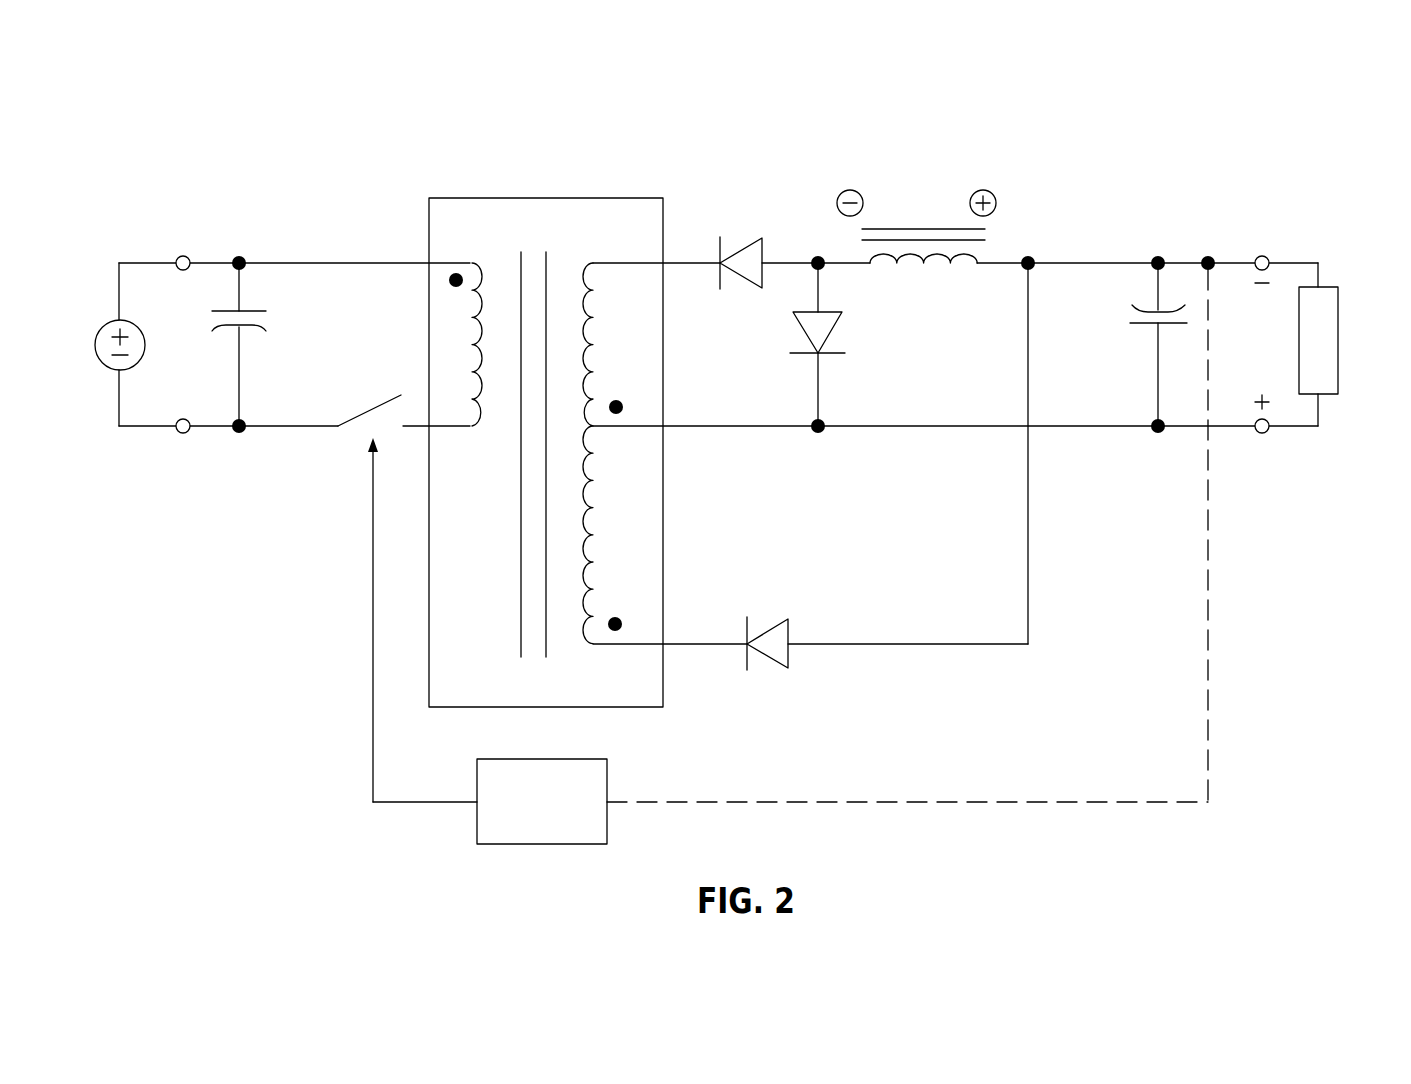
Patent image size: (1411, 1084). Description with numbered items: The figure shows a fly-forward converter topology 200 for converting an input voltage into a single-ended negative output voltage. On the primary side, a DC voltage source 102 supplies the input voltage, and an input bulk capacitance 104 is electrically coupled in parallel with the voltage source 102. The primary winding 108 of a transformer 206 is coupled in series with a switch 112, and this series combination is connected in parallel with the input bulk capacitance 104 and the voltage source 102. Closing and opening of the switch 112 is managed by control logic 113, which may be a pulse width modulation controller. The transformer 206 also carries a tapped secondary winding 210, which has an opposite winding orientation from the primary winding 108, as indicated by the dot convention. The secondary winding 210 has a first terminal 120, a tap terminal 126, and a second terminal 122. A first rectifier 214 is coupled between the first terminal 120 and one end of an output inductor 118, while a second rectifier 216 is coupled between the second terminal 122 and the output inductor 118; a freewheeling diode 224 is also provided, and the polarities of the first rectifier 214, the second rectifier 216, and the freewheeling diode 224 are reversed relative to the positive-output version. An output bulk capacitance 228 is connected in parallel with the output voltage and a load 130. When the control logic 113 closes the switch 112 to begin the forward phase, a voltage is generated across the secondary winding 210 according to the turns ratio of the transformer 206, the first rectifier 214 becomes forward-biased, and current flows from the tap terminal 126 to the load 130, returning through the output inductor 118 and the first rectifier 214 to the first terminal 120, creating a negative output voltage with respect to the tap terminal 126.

The fly-forward converter topology 200 is at (351, 152).
The voltage source 102 is at (102, 326).
The input bulk capacitance 104 is at (265, 310).
The switch 112 is at (375, 404).
The primary winding 108 is at (472, 428).
The transformer 206 is at (614, 198).
The tapped secondary winding 210 is at (583, 652).
The first terminal 120 is at (683, 262).
The tap terminal 126 is at (693, 426).
The second terminal 122 is at (706, 643).
The first rectifier 214 is at (750, 284).
The freewheeling diode 224 is at (836, 355).
The output inductor 118 is at (925, 269).
The output bulk capacitance 228 is at (1139, 326).
The load 130 is at (1338, 320).
The second rectifier 216 is at (788, 670).
The control logic 113 is at (560, 828).